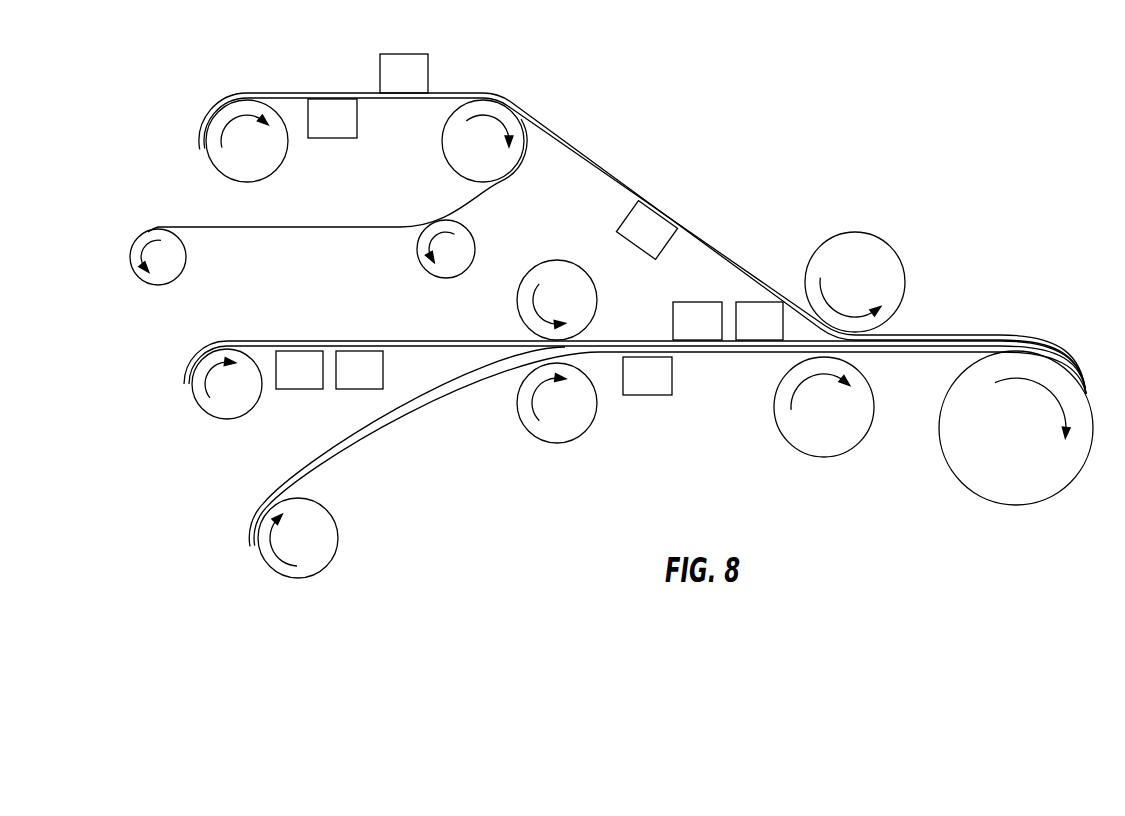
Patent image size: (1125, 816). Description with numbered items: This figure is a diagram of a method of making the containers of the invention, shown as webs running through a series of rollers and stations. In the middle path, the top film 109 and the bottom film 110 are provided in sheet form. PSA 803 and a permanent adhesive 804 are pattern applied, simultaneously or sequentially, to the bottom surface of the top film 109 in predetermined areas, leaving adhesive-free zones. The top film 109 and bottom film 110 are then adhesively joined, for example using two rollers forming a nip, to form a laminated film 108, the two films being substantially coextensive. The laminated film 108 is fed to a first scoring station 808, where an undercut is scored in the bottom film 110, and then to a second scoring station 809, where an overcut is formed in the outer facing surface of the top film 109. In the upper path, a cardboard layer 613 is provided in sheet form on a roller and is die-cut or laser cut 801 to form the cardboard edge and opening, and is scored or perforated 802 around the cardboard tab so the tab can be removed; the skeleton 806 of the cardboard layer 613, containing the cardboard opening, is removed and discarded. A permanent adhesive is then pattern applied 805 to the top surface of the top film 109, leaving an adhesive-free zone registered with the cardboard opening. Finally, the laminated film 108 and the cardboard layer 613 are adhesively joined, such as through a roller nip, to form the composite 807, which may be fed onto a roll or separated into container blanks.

The cardboard layer 613 is at (277, 94).
The die-cut or laser cut 801 is at (348, 131).
The scored or perforated 802 is at (420, 86).
The PSA 803 is at (316, 383).
The permanent adhesive 804 is at (376, 383).
The permanent adhesive pattern applied 805 is at (760, 270).
The skeleton 806 is at (284, 226).
The composite 807 is at (925, 318).
The first scoring station 808 is at (664, 389).
The second scoring station 809 is at (714, 334).
The laminated film 108 is at (612, 367).
The top film 109 is at (237, 341).
The bottom film 110 is at (312, 468).